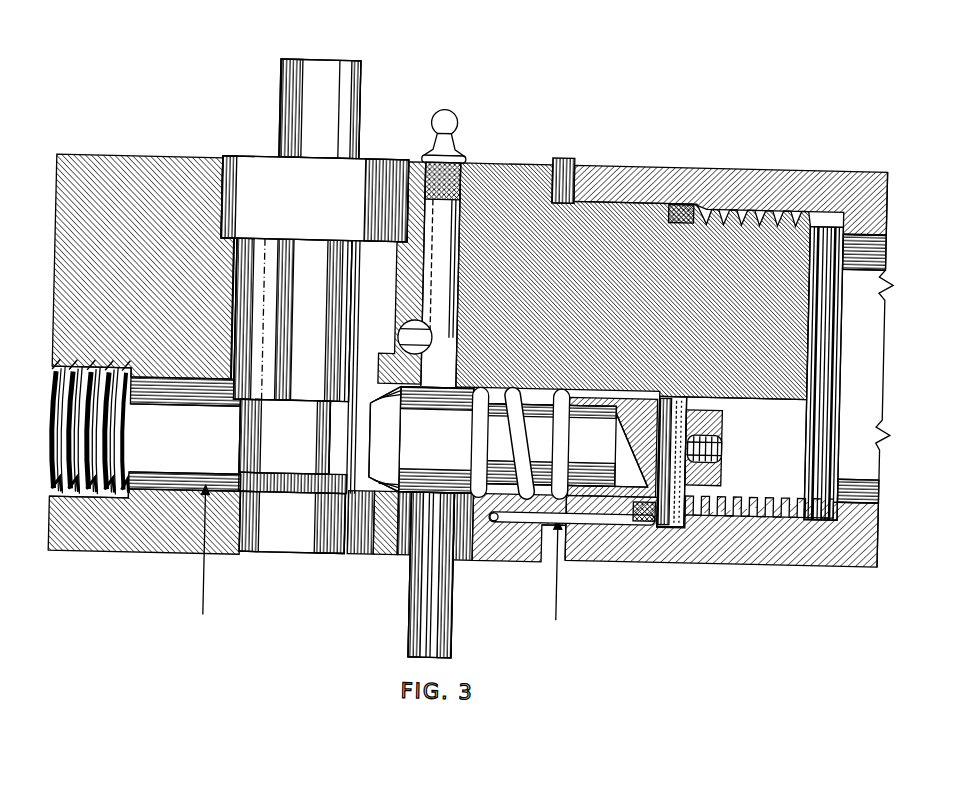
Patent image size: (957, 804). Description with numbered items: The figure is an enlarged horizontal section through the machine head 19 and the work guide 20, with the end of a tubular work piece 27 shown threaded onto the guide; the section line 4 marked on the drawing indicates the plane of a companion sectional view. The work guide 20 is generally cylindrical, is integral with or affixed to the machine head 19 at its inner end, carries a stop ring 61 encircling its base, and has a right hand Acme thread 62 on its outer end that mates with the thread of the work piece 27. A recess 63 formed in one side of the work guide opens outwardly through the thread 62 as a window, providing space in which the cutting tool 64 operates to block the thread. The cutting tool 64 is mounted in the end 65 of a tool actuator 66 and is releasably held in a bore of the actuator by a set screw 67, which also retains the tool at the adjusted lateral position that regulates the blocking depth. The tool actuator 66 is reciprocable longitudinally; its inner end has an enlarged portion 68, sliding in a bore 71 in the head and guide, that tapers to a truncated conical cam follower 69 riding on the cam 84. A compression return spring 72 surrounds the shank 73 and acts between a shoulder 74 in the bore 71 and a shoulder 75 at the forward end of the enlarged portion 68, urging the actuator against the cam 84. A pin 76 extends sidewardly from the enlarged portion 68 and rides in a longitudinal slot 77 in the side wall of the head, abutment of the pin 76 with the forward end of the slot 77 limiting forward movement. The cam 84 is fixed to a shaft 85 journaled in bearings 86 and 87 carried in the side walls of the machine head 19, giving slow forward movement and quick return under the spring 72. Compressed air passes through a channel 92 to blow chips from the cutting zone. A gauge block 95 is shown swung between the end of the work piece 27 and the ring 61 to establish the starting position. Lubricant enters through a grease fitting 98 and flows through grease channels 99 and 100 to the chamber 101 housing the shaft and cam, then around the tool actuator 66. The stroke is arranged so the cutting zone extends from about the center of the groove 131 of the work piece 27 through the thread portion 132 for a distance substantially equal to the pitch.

The section line 4- 4 is at (379, 565).
The machine head 19 is at (111, 165).
The work guide 20 is at (634, 206).
The work piece 27 is at (734, 161).
The stop ring 61 is at (555, 538).
The thread 62 is at (779, 213).
The recess 63 is at (799, 439).
The cutting tool 64 is at (692, 474).
The end of tool actuator 65 is at (725, 415).
The tool actuator 66 is at (631, 506).
The set screw 67 is at (719, 438).
The enlarged portion 68 is at (403, 511).
The cam follower 69 is at (359, 562).
The bore 71 is at (540, 386).
The compression return spring 72 is at (479, 444).
The shank 73 is at (615, 510).
The shoulder 74 is at (562, 390).
The shoulder 75 is at (476, 394).
The pin 76 is at (454, 652).
The longitudinal slot 77 is at (466, 556).
The cam 84 is at (303, 419).
The shaft 85 is at (336, 66).
The bearing 86 is at (286, 544).
The bearing 87 is at (274, 171).
The channel 92 is at (581, 522).
The gauge block 95 is at (573, 157).
The grease fitting 98 is at (449, 113).
The grease channel 99 is at (428, 274).
The grease channel 100 is at (396, 350).
The chamber 101 is at (232, 262).
The groove 131 is at (695, 510).
The thread portion 132 is at (648, 508).